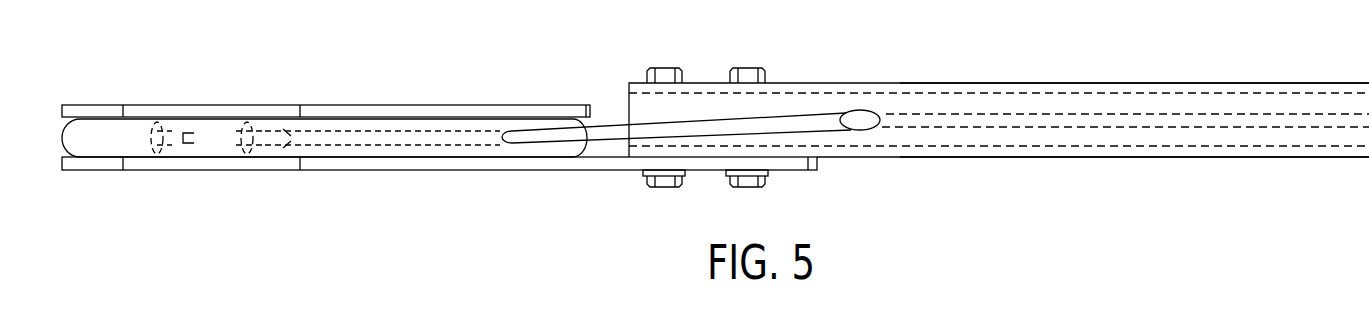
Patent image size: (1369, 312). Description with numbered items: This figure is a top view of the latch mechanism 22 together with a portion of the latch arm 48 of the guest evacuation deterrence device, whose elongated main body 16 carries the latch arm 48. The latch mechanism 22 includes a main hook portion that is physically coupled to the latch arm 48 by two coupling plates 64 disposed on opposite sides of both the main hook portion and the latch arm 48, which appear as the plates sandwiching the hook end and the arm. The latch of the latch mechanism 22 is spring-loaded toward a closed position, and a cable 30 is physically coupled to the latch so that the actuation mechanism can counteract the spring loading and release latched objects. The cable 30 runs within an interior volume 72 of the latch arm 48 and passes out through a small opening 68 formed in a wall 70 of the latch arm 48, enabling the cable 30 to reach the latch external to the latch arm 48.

The elongated main body 16 is at (1323, 83).
The latch mechanism 22 is at (262, 172).
The cable 30 is at (795, 118).
The latch arm 48 is at (1280, 157).
The coupling plates 64 is at (345, 105).
The small opening 68 is at (858, 115).
The wall 70 is at (1070, 83).
The interior volume 72 is at (1069, 139).